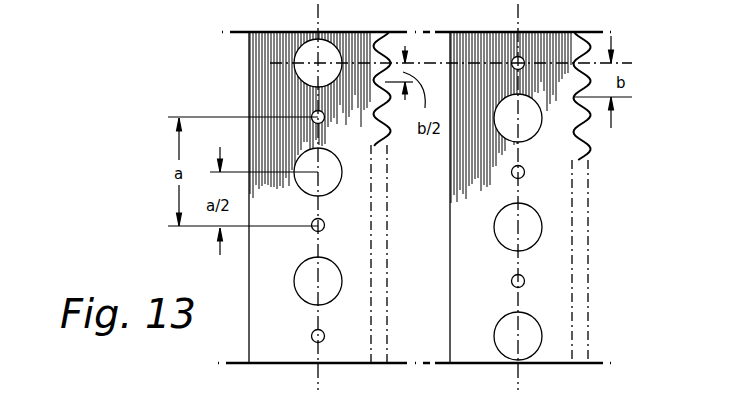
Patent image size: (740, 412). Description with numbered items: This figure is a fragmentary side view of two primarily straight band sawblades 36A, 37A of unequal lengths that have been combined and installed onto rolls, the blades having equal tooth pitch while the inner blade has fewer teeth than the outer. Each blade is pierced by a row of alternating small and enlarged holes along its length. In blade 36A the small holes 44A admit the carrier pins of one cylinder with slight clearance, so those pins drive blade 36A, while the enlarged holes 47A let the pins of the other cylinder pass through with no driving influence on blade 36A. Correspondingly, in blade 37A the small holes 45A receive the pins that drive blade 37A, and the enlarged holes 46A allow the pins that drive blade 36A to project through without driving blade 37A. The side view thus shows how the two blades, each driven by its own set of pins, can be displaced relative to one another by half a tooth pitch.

The sawblade 36A is at (257, 50).
The sawblade 37A is at (545, 224).
The hole 44A is at (323, 121).
The hole 45A is at (513, 176).
The enlarged hole 46A is at (533, 134).
The enlarged hole 47A is at (327, 193).